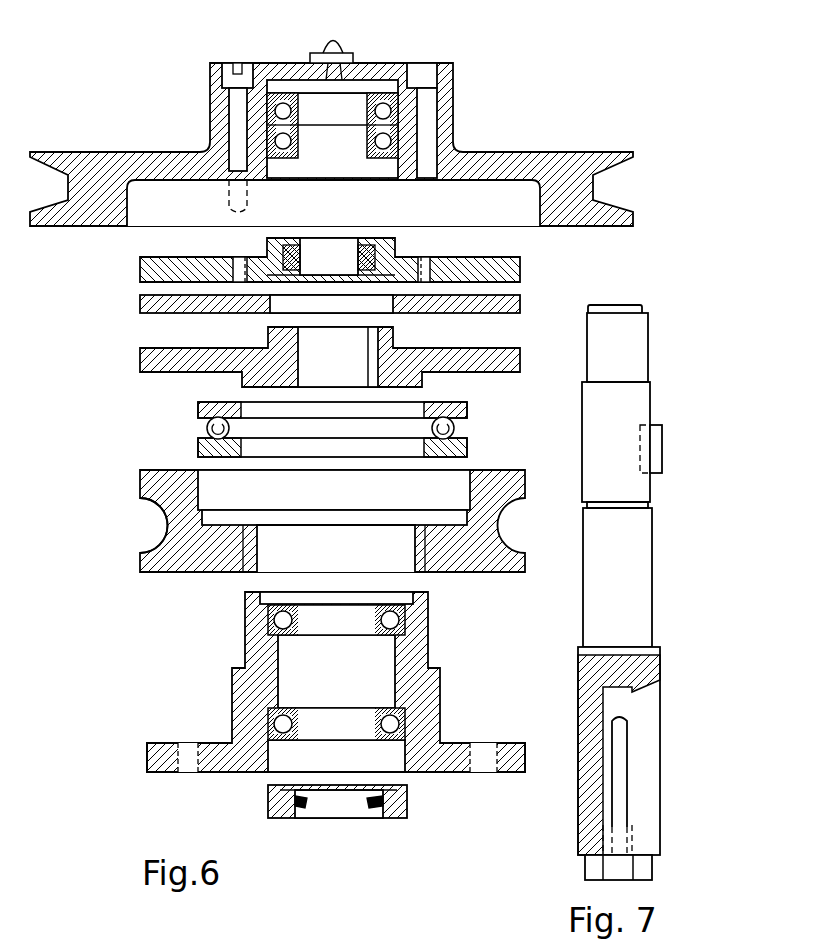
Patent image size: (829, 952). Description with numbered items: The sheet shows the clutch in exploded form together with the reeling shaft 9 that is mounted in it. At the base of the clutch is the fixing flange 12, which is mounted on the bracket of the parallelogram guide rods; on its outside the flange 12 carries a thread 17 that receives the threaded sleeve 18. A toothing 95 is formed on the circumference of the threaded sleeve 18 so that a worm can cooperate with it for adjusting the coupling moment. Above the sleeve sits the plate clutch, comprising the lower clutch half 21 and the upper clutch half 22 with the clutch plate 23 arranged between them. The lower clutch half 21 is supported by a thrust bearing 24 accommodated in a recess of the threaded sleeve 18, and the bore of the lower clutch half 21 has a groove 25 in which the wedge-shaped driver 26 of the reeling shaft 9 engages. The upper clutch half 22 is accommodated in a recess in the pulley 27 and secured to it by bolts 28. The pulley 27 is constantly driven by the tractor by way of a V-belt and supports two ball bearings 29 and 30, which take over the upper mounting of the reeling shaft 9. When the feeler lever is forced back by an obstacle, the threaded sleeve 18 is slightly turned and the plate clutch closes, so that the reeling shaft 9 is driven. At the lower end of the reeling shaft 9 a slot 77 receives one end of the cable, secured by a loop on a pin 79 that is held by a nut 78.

In FIG. 6, the pulley 27 is at (513, 157).
In FIG. 6, the bolts 28 is at (244, 78).
In FIG. 6, the ball bearing 29 is at (458, 99).
In FIG. 6, the ball bearing 30 is at (285, 136).
In FIG. 6, the upper clutch half 22 is at (140, 268).
In FIG. 6, the clutch plate 23 is at (140, 305).
In FIG. 6, the lower clutch half 21 is at (140, 360).
In FIG. 6, the groove 25 is at (372, 343).
In FIG. 6, the thrust bearing 24 is at (196, 434).
In FIG. 6, the threaded sleeve 18 is at (190, 578).
In FIG. 6, the toothing 95 is at (165, 527).
In FIG. 6, the thread 17 is at (228, 657).
In FIG. 6, the fixing flange 12 is at (228, 772).
In FIG. 7, the reeling shaft 9 is at (638, 581).
In FIG. 7, the wedge-shaped driver 26 is at (662, 441).
In FIG. 7, the slot 77 is at (648, 822).
In FIG. 7, the pin 79 is at (617, 760).
In FIG. 7, the nut 78 is at (645, 870).